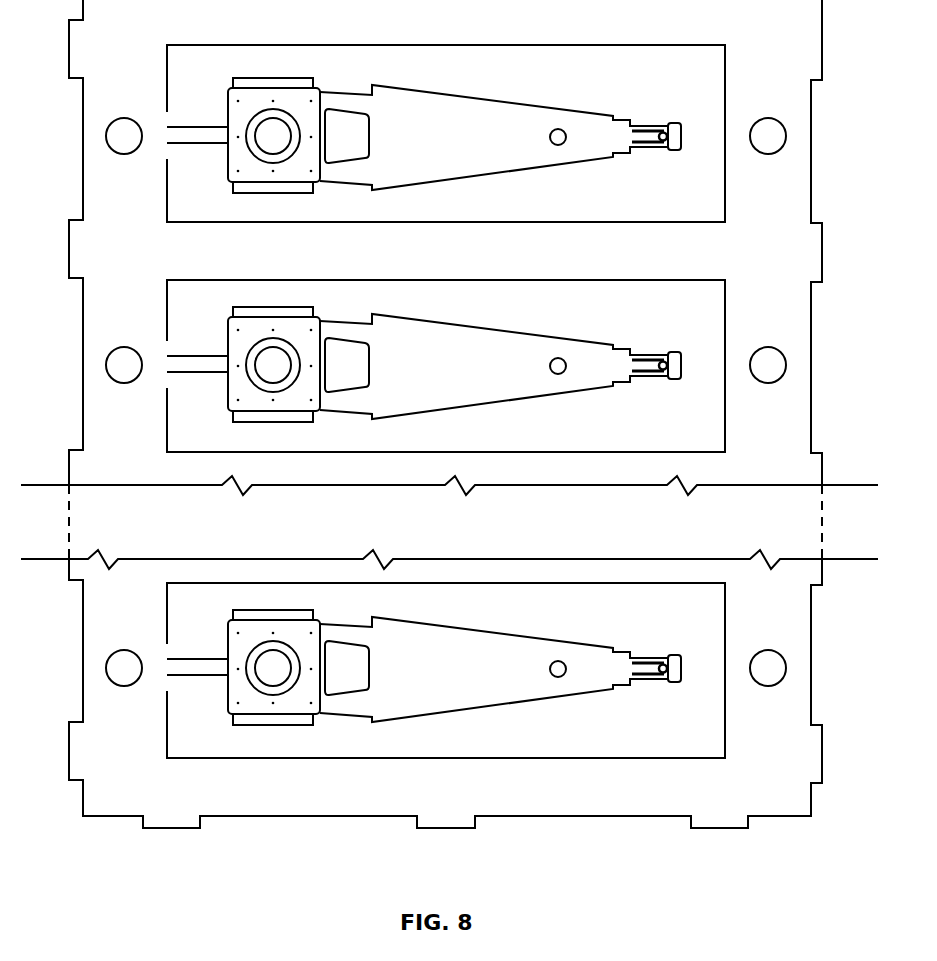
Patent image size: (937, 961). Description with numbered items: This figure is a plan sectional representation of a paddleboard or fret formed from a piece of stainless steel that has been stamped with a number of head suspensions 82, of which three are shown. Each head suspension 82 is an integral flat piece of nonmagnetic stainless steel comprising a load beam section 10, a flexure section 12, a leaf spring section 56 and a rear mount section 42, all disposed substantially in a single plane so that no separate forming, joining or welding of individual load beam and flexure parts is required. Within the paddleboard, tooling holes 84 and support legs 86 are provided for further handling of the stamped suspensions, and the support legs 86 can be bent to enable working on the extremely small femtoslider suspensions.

The load beam section 10 is at (436, 101).
The flexure section 12 is at (662, 125).
The rear mount section 42 is at (280, 76).
The leaf spring section 56 is at (337, 94).
The head suspensions 82 is at (540, 101).
The tooling holes 84 is at (108, 664).
The support legs 86 is at (71, 748).